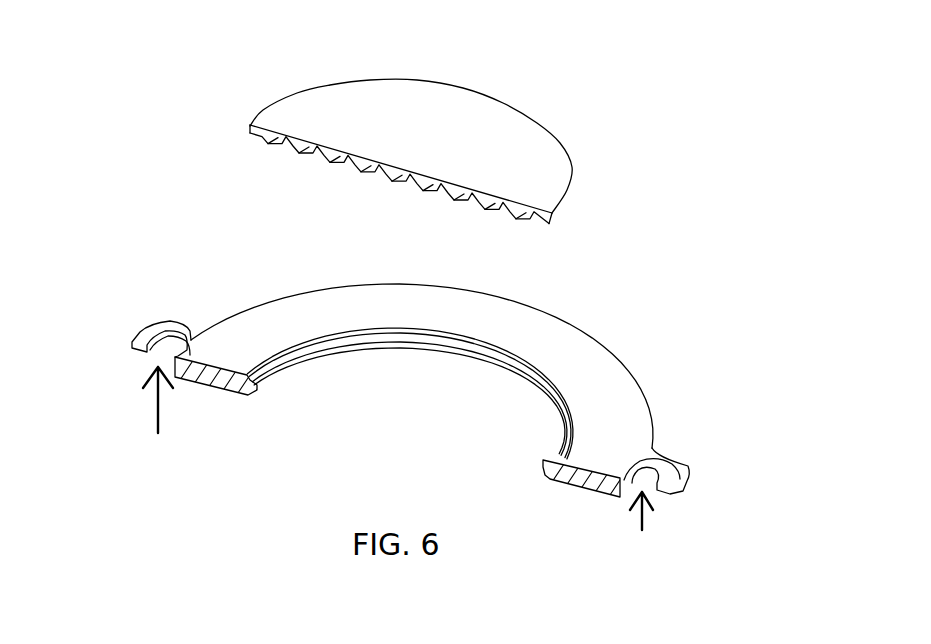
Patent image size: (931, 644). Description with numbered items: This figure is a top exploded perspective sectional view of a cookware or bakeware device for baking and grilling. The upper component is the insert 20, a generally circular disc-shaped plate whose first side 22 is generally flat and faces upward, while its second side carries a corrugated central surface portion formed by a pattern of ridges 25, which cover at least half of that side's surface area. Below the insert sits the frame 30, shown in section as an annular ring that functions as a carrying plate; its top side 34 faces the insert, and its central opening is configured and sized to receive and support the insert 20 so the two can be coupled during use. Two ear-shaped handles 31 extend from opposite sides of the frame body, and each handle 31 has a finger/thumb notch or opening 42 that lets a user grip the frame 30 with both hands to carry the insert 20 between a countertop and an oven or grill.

The insert 20 is at (695, 107).
The first side 22 is at (315, 107).
The ridges 25 is at (290, 147).
The frame 30 is at (680, 260).
The handle 31 is at (150, 335).
The top side 34 is at (633, 395).
The finger/thumb notch or opening 42 is at (398, 467).